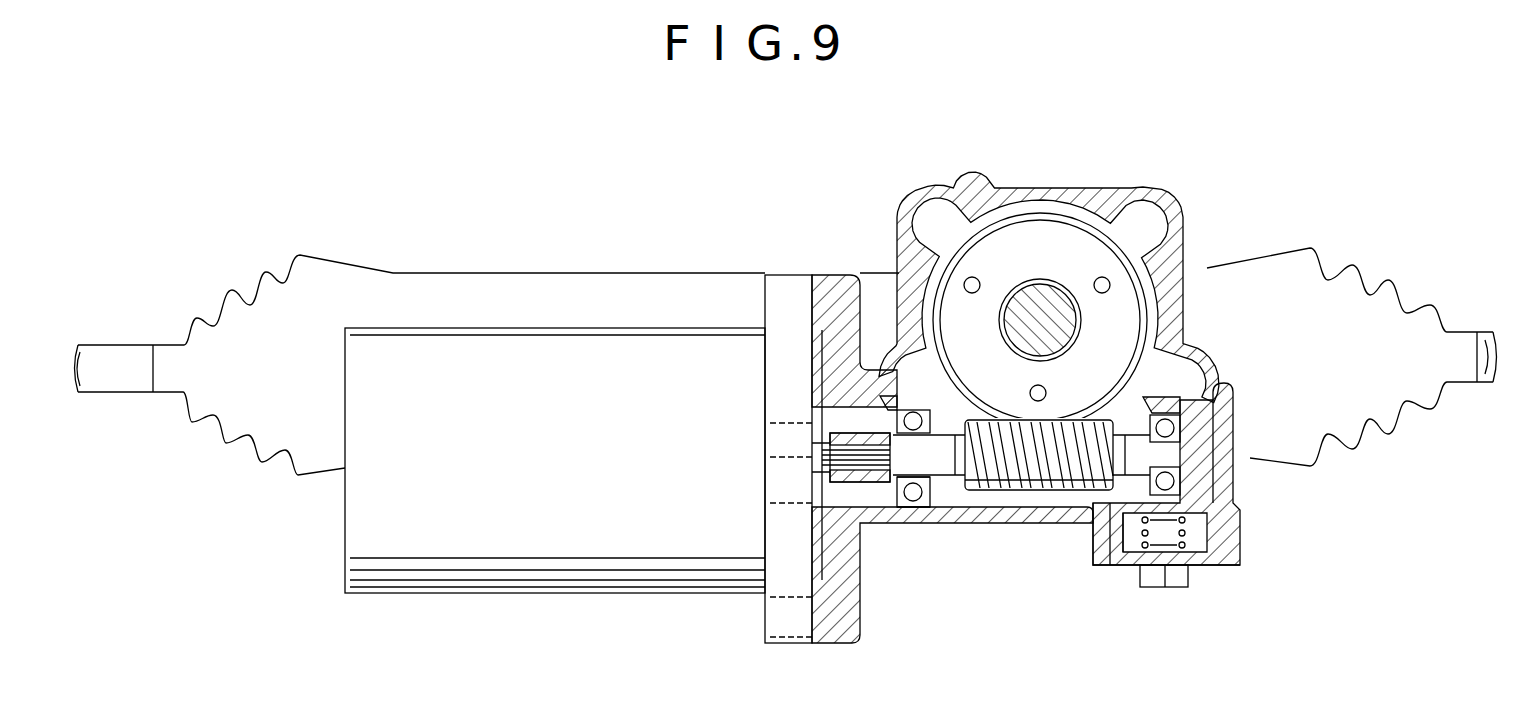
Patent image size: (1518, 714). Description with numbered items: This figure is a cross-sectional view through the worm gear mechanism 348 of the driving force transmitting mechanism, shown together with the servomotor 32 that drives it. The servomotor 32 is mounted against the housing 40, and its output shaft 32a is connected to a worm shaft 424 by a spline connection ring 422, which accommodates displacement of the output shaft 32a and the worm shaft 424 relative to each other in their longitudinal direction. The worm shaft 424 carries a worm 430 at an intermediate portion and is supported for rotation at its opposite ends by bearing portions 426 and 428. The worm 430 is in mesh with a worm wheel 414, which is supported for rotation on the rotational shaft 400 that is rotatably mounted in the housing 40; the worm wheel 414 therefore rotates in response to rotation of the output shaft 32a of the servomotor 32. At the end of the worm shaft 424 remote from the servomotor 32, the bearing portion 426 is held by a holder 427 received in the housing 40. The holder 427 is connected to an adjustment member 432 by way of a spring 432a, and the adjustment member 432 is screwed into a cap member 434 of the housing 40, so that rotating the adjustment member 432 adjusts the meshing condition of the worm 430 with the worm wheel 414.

The servomotor 32 is at (493, 585).
The output shaft 32a is at (822, 477).
The housing 40 is at (1068, 190).
The worm wheel 414 is at (1023, 243).
The rotational shaft 400 is at (1010, 345).
The spline connection ring 422 is at (863, 490).
The bearing portion 428 is at (910, 493).
The worm gear mechanism 348 is at (990, 493).
The worm 430 is at (992, 490).
The worm shaft 424 is at (1022, 467).
The holder 427 is at (1203, 473).
The bearing portion 426 is at (1213, 513).
The spring 432a is at (1180, 533).
The adjustment member 432 is at (1190, 580).
The cap member 434 is at (1113, 563).